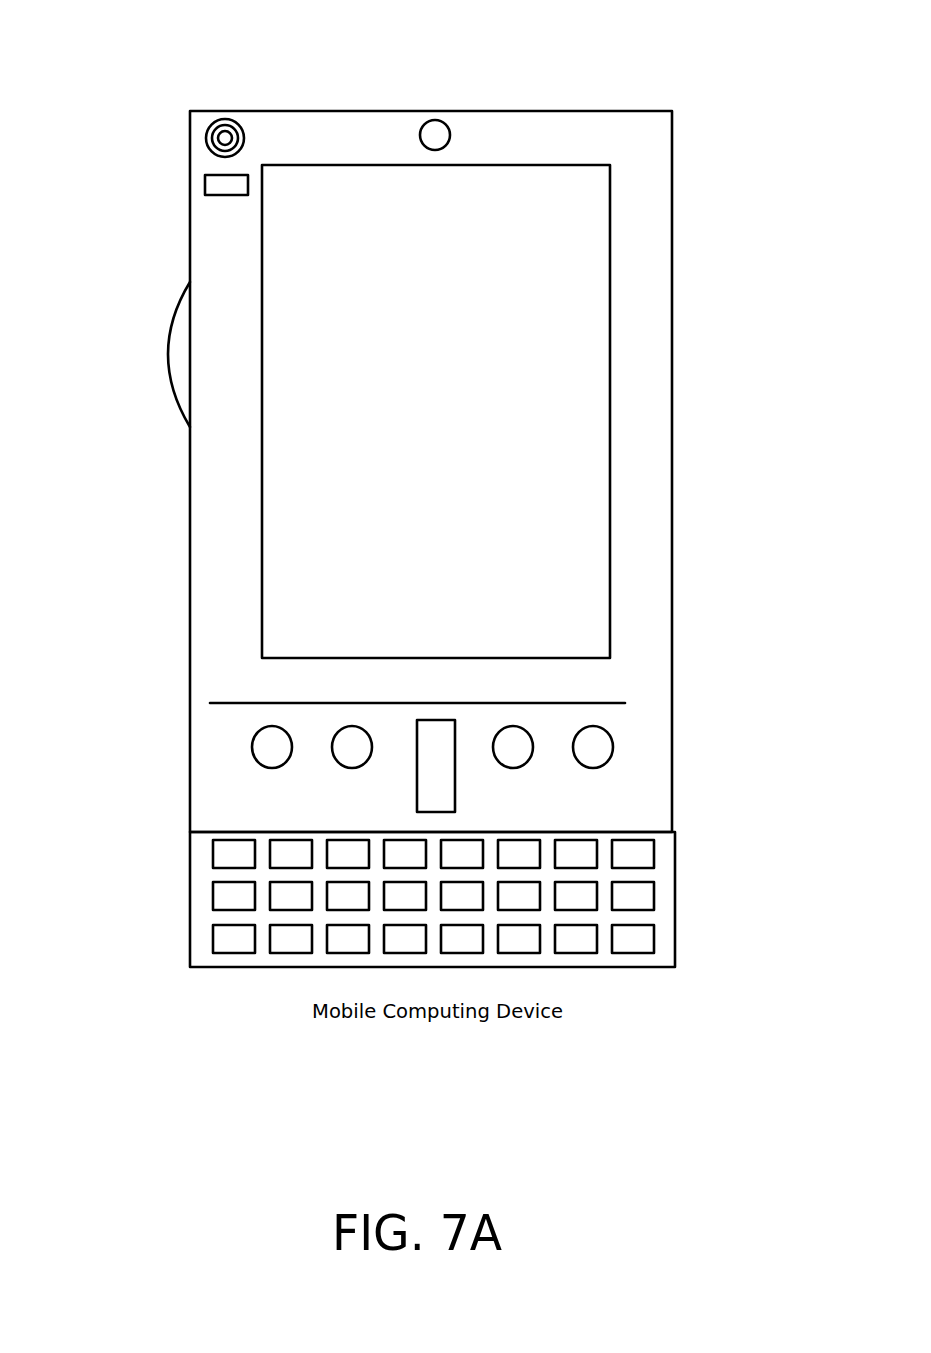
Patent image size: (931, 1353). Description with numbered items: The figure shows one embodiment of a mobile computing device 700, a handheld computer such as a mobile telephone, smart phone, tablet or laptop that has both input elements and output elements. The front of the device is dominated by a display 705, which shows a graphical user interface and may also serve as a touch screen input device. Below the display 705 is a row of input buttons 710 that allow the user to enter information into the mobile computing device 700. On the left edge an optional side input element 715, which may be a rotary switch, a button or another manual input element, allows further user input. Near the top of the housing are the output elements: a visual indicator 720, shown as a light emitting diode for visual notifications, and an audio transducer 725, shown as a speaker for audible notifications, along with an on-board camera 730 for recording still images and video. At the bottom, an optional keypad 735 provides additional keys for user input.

The mobile computing device 700 is at (661, 129).
The display 705 is at (370, 577).
The input buttons 710 is at (435, 770).
The side input element 715 is at (180, 352).
The visual indicator 720 is at (205, 190).
The audio transducer 725 is at (207, 138).
The on-board camera 730 is at (448, 134).
The keypad 735 is at (200, 943).